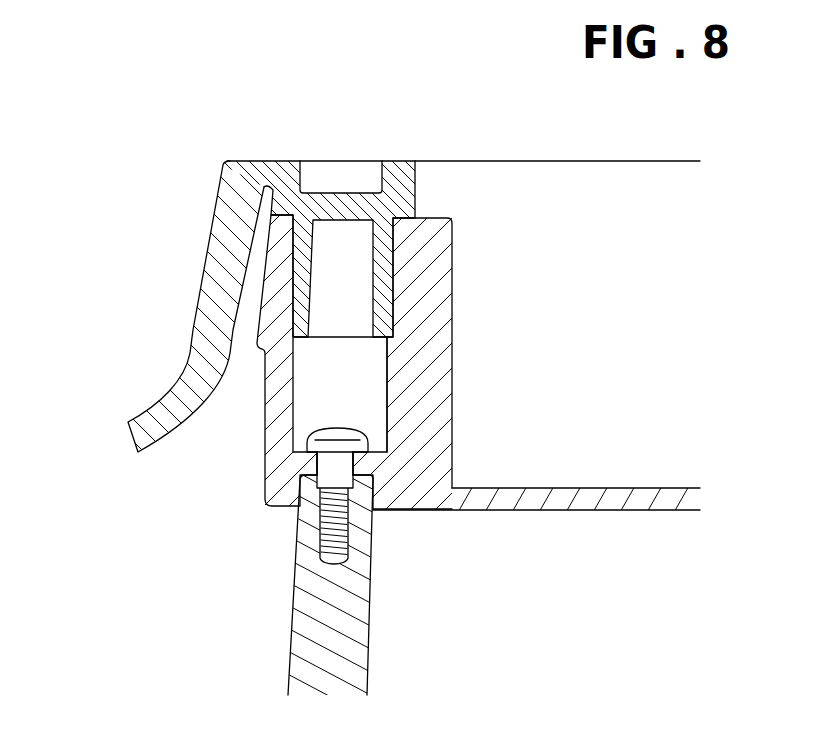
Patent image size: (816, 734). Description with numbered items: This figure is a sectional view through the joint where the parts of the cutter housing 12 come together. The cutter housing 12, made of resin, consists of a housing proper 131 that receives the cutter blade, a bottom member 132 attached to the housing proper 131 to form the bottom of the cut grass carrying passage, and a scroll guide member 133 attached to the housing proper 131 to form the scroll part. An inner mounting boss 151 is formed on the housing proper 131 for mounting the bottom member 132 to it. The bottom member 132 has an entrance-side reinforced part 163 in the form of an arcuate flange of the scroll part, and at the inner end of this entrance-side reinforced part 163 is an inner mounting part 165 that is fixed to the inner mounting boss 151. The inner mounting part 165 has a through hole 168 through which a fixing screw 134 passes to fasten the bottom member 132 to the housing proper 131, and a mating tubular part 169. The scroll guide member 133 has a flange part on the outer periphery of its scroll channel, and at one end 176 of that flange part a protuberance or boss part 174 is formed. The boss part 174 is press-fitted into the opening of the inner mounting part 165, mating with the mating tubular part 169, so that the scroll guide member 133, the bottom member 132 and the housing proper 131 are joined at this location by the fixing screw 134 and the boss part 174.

The cutter housing 12 is at (200, 87).
The housing proper 131 is at (216, 642).
The bottom member 132 is at (640, 284).
The scroll guide member 133 is at (172, 200).
The fixing screw 134 is at (321, 427).
The inner mounting boss 151 is at (378, 604).
The entrance-side reinforced part 163 is at (673, 488).
The inner mounting part 165 is at (467, 454).
The through hole 168 is at (350, 441).
The mating tubular part 169 is at (386, 383).
The boss part 174 is at (397, 264).
The end of flange part 176 is at (403, 160).